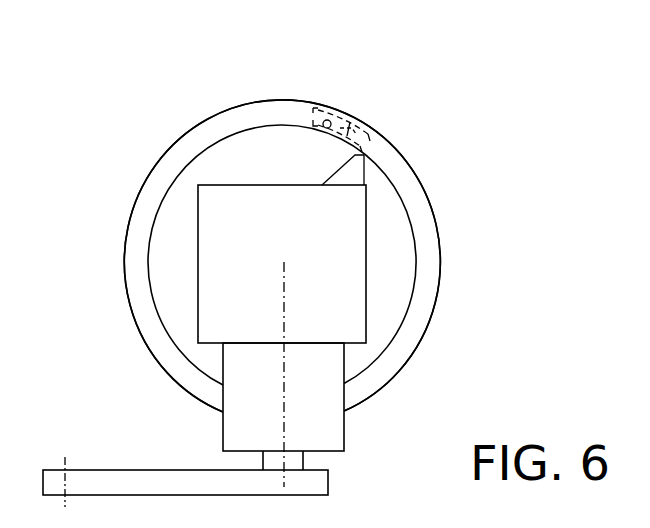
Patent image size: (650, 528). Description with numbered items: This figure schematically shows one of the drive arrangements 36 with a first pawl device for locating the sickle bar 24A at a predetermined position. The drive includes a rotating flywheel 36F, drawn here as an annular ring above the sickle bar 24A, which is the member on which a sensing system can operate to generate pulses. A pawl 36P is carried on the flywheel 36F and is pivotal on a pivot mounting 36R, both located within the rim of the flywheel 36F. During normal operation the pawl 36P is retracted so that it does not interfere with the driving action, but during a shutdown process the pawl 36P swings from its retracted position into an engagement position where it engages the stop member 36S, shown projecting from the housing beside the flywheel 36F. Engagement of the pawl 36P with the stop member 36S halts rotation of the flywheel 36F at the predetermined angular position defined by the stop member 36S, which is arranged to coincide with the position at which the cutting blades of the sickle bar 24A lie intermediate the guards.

The drive arrangement 36 is at (386, 303).
The flywheel 36F is at (418, 214).
The pivot mounting 36R is at (327, 120).
The pawl 36P is at (348, 130).
The stop member 36S is at (350, 169).
The sickle bar 24A is at (137, 470).